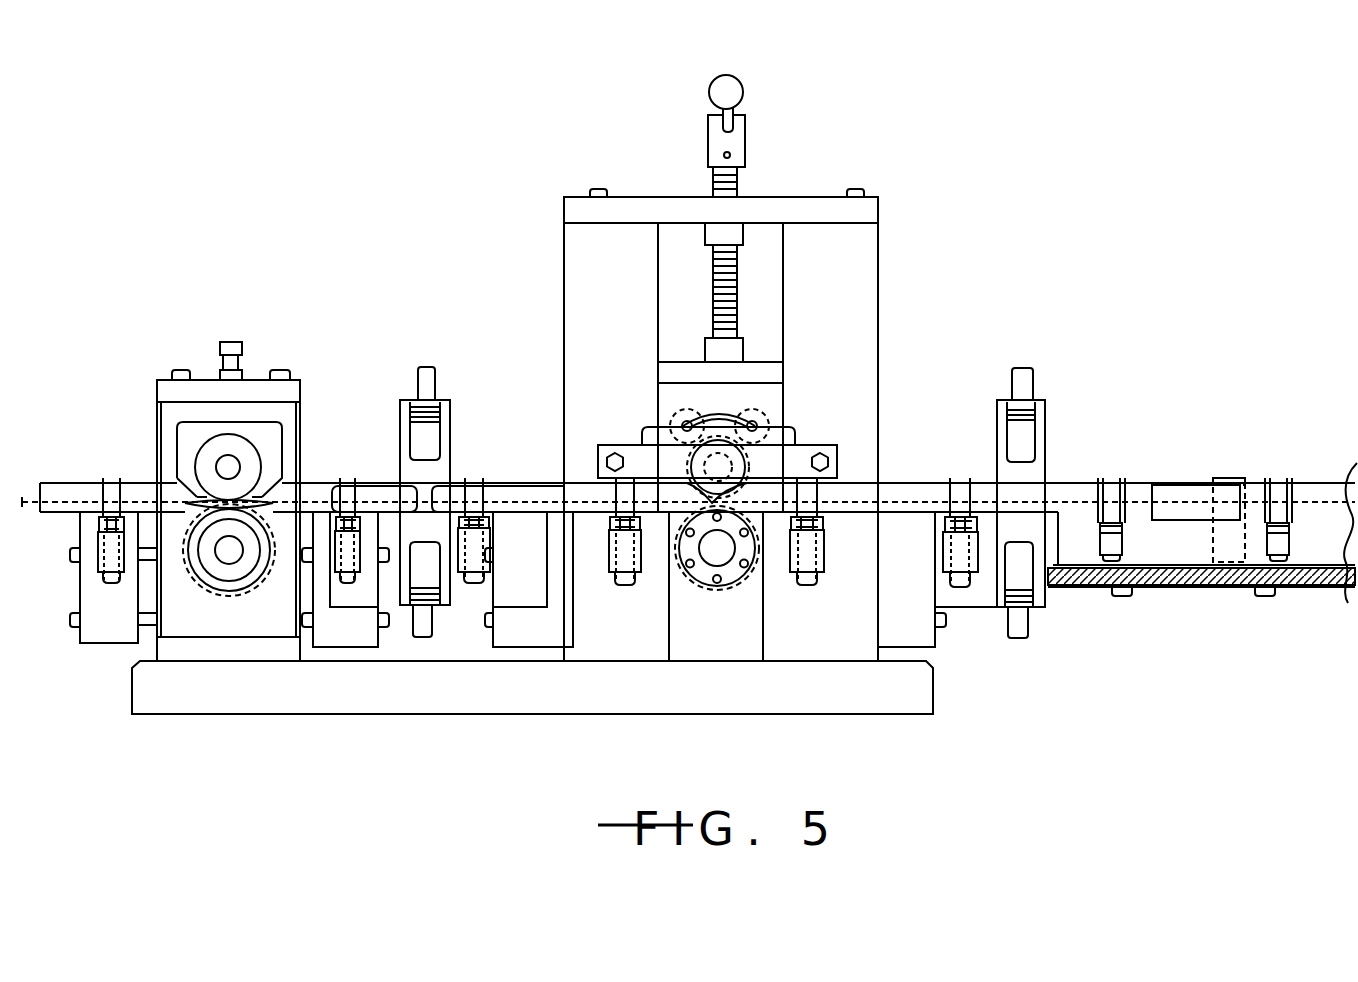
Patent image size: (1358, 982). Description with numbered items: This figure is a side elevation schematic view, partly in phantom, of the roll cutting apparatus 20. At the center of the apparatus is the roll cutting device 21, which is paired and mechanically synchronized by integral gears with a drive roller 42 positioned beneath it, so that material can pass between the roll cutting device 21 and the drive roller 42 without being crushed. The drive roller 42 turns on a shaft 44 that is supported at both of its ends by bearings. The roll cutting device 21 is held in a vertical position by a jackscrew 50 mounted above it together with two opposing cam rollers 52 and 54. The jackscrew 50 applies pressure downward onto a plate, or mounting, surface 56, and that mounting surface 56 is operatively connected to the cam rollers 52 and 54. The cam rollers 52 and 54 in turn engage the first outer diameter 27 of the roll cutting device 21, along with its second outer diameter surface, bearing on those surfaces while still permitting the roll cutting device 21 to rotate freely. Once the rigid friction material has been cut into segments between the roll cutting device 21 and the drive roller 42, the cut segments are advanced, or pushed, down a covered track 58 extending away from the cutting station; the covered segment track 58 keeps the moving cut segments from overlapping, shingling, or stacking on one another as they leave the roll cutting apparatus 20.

The roll cutting apparatus 20 is at (322, 240).
The roll cutting device 21 is at (667, 460).
The first outer diameter 27 is at (797, 450).
The drive roller 42 is at (694, 572).
The shaft 44 is at (734, 568).
The jackscrew 50 is at (748, 141).
The cam roller 52 is at (683, 410).
The cam roller 54 is at (753, 405).
The plate or mounting surface 56 is at (787, 427).
The covered track 58 is at (1073, 500).